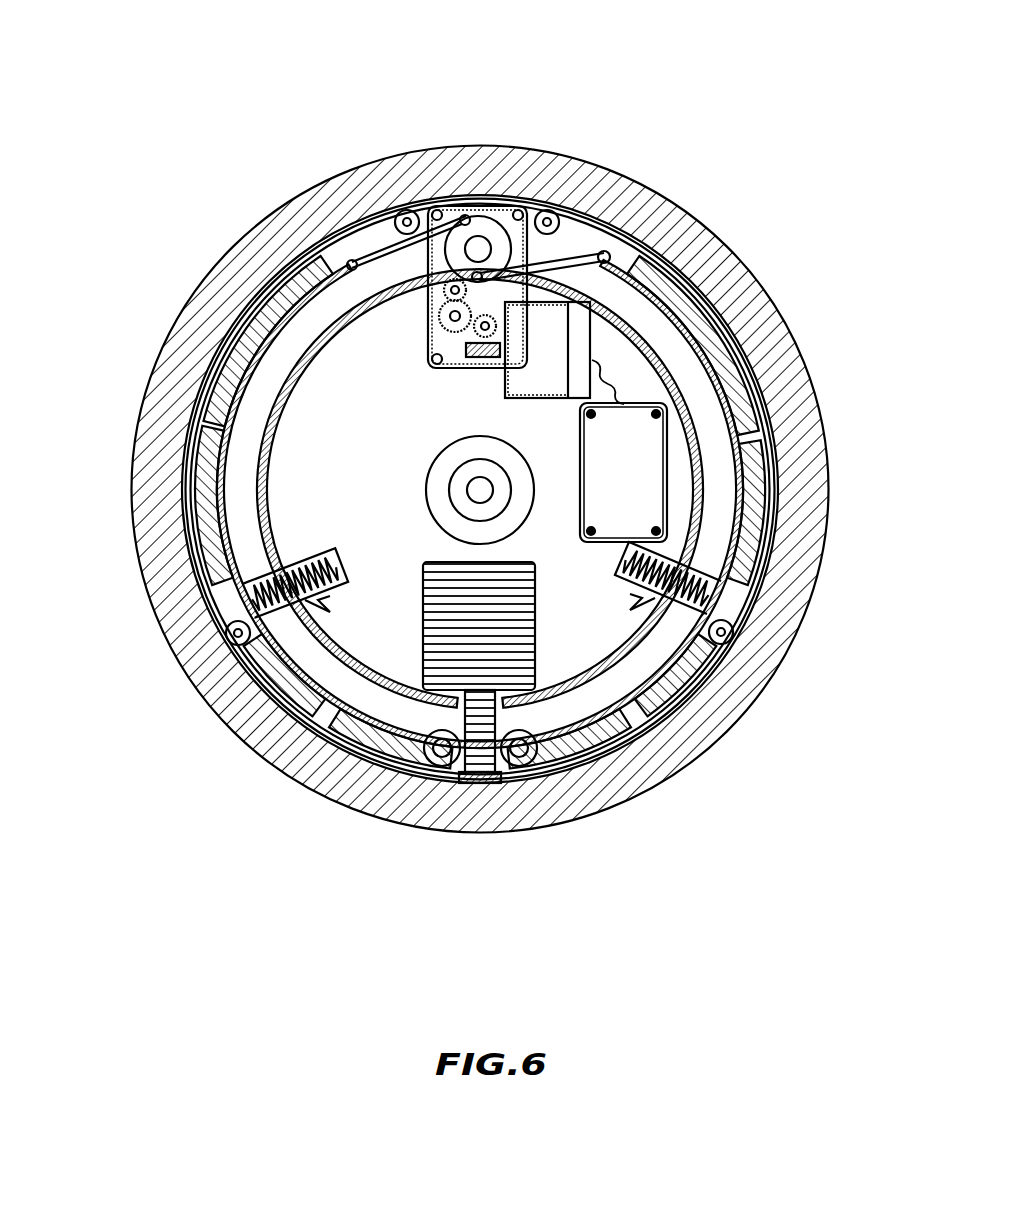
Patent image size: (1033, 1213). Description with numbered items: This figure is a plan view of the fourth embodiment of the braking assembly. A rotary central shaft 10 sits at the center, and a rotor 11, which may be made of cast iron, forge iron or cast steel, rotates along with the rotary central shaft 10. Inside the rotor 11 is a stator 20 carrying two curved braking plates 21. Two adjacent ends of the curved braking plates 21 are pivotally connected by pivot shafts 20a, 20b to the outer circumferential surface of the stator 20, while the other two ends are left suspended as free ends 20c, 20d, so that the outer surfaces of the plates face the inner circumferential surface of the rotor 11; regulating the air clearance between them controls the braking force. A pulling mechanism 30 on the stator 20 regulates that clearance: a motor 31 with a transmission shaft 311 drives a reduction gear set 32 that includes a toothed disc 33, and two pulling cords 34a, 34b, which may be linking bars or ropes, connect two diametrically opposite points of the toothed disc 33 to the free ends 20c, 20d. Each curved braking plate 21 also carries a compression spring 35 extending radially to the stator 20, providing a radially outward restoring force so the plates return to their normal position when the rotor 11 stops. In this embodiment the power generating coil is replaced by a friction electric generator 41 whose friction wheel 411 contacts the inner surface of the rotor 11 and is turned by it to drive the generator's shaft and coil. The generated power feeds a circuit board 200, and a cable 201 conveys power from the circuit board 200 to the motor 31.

The rotary central shaft 10 is at (478, 490).
The rotor 11 is at (738, 703).
The stator 20 is at (257, 478).
The pivot shaft 20a is at (440, 765).
The pivot shaft 20b is at (522, 758).
The free end 20c is at (350, 256).
The free end 20d is at (612, 252).
The curved braking plate 21 is at (327, 713).
The pulling mechanism 30 is at (438, 175).
The motor 31 is at (540, 350).
The transmission shaft 311 is at (423, 357).
The reduction gear set 32 is at (512, 210).
The toothed disc 33 is at (485, 207).
The pulling cord 34a is at (400, 207).
The pulling cord 34b is at (595, 245).
The compression spring 35 is at (232, 592).
The friction electric generator 41 is at (513, 663).
The friction wheel 411 is at (488, 785).
The circuit board 200 is at (660, 478).
The cable 201 is at (618, 385).